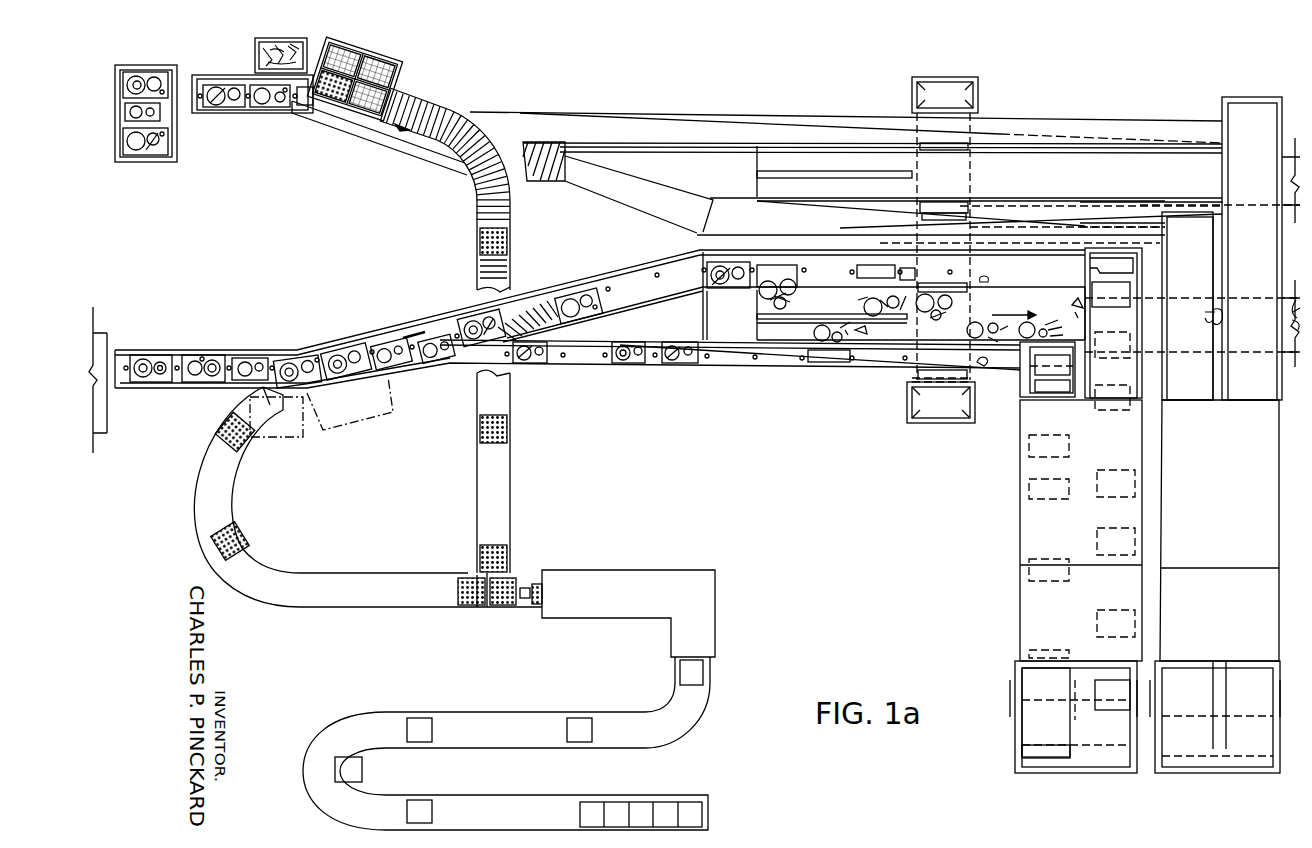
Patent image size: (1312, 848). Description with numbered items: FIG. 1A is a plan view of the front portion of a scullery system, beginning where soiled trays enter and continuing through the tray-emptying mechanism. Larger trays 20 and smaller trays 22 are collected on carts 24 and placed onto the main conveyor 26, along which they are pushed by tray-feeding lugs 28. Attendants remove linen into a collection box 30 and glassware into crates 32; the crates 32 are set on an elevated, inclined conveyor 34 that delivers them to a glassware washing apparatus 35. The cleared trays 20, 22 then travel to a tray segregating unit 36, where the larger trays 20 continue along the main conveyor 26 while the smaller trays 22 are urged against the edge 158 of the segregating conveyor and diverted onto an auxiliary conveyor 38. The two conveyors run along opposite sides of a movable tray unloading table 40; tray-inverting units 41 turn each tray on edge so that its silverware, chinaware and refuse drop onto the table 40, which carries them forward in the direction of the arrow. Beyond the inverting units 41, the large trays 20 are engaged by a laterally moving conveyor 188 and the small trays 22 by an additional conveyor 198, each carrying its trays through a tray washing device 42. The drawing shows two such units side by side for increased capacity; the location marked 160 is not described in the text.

The larger tray 20 is at (140, 76).
The smaller tray 22 is at (173, 117).
The cart 24 is at (148, 162).
The main conveyor 26 is at (216, 80).
The tray-feeding lug 28 is at (201, 97).
The collection box 30 is at (287, 40).
The crate 32 is at (352, 52).
The elevated and inclined conveyor 34 is at (423, 108).
The glassware washing apparatus 35 is at (611, 575).
The tray segregating unit 36 is at (375, 322).
The auxiliary conveyor 38 is at (605, 367).
The tray unloading table 40 is at (757, 320).
The tray-inverting unit 41 is at (953, 277).
The tray washing device 42 is at (1040, 507).
The edge of the conveyor 158 is at (363, 377).
The transfer station 160 is at (303, 393).
The laterally moving conveyor 188 is at (1130, 318).
The additional conveyor 198 is at (1023, 405).